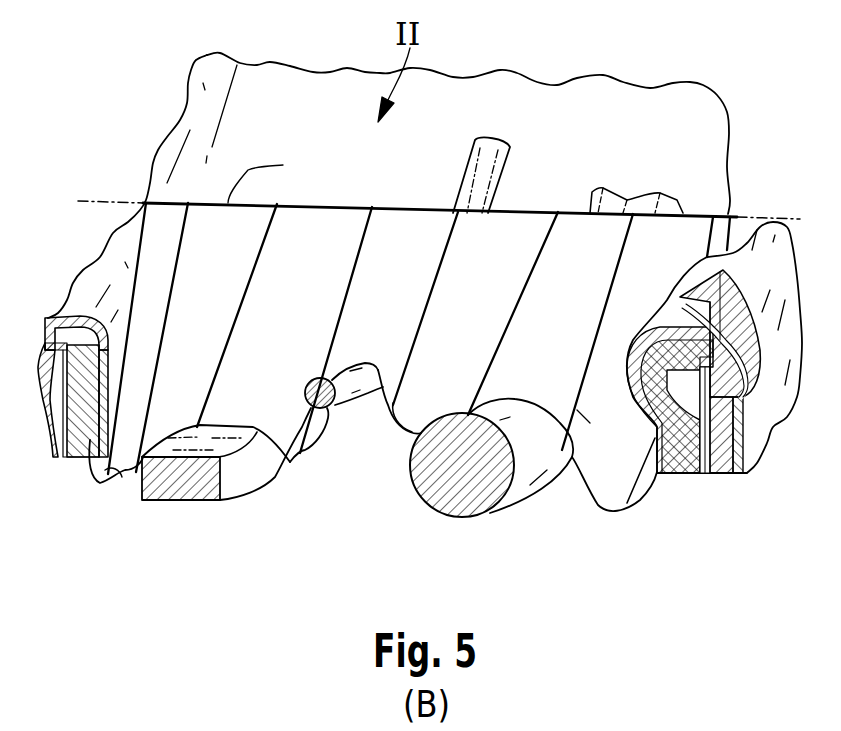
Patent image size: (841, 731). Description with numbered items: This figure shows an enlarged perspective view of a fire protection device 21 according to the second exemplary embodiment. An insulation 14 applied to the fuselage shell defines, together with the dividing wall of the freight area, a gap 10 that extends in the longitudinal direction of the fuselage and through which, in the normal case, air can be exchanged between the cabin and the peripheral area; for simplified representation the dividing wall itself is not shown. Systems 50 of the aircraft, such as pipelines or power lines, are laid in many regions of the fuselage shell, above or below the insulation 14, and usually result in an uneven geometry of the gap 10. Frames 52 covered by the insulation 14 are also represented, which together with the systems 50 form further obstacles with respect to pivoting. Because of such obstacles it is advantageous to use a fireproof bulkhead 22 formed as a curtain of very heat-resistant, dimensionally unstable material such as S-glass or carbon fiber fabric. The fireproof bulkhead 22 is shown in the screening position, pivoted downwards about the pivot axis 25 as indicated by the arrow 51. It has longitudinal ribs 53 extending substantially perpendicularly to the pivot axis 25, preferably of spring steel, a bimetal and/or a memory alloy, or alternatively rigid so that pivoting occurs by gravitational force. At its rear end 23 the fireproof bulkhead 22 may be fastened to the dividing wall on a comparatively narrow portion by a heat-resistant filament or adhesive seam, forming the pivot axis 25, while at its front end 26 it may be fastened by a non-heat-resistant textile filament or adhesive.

The gap 10 is at (464, 116).
The insulation 14 is at (563, 107).
The fire protection device 21 is at (82, 535).
The fireproof bulkhead 22 is at (616, 470).
The rear end 23 is at (283, 165).
The pivot axis 25 is at (758, 213).
The front end 26 is at (287, 460).
The systems 50 is at (183, 478).
The arrow 51 is at (225, 203).
The frames 52 is at (60, 457).
The longitudinal ribs 53 is at (278, 233).